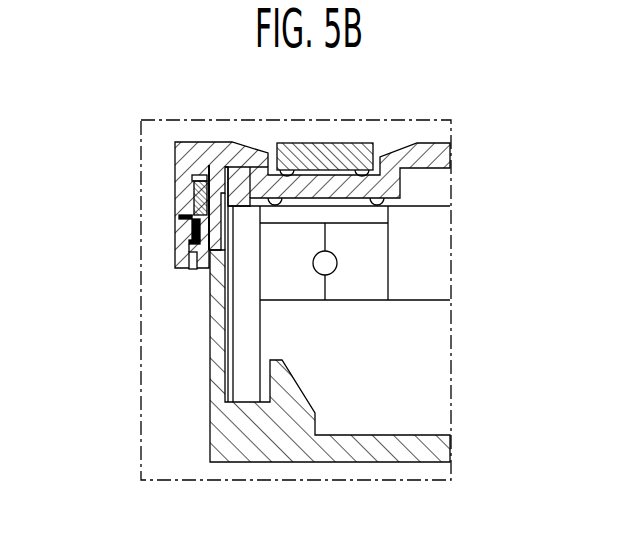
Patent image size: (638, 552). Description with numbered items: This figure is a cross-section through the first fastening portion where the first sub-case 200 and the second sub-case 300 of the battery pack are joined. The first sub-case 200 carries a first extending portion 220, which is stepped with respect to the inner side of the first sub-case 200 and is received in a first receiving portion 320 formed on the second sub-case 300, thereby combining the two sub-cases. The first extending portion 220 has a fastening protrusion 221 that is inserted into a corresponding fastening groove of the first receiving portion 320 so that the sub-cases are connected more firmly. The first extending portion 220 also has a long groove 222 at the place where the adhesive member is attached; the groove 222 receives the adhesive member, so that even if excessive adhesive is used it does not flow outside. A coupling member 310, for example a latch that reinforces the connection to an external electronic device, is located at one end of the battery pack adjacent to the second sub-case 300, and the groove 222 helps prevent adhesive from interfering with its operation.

The first sub-case 200 is at (203, 360).
The first extending portion 220 is at (192, 178).
The fastening protrusion 221 is at (205, 218).
The groove 222 is at (192, 224).
The second sub-case 300 is at (168, 152).
The coupling member 310 is at (338, 140).
The first receiving portion 320 is at (203, 265).